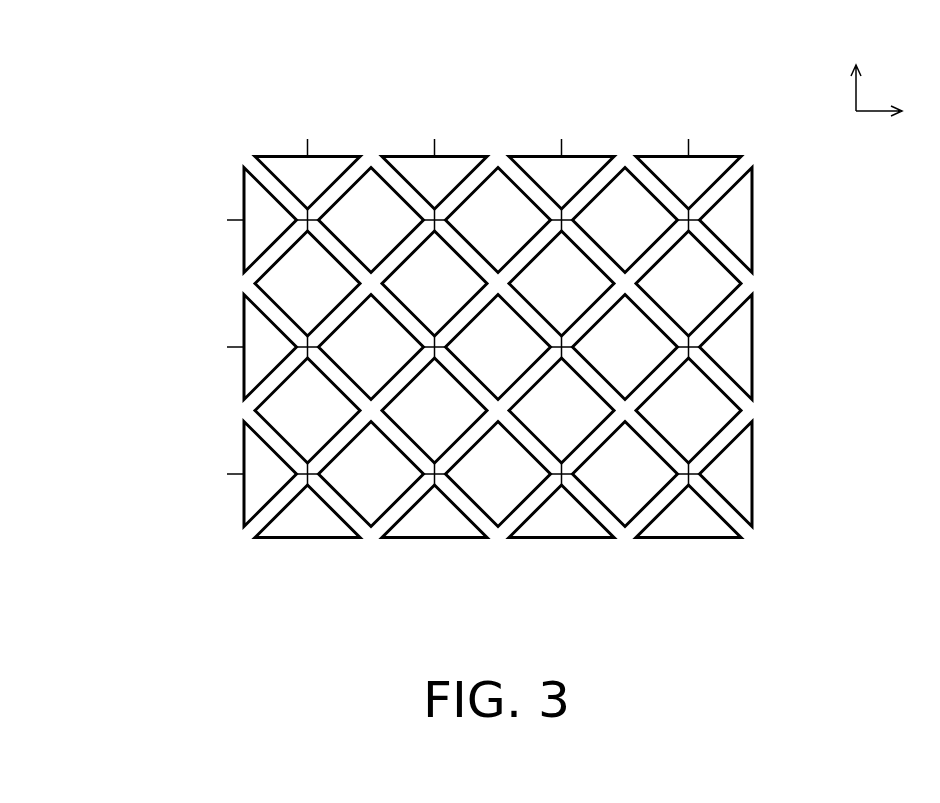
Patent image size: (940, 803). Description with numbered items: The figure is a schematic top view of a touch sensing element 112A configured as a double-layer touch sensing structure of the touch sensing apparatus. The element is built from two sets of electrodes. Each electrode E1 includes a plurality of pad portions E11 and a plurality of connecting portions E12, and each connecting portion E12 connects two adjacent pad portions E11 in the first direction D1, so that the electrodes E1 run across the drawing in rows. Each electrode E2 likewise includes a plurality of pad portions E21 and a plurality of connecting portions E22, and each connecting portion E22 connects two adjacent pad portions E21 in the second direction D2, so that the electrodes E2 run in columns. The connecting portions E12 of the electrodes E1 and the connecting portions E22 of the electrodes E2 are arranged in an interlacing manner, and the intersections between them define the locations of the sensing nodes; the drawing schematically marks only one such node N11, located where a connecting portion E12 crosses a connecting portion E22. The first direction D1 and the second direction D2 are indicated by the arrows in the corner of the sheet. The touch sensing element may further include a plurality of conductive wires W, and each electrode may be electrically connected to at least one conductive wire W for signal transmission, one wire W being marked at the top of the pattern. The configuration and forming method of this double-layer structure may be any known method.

The touch sensing element 112A is at (928, 610).
The electrode E1 is at (764, 222).
The electrode E2 is at (313, 550).
The pad portion E11 is at (247, 435).
The connecting portion E12 is at (298, 471).
The pad portion E21 is at (288, 527).
The connecting portion E22 is at (302, 480).
The node N11 is at (690, 218).
The conductive wire W is at (690, 148).
The first direction D1 is at (894, 114).
The second direction D2 is at (857, 72).